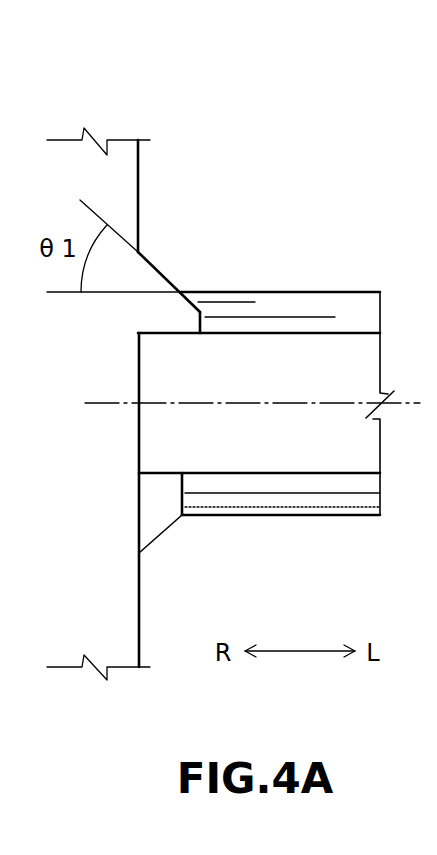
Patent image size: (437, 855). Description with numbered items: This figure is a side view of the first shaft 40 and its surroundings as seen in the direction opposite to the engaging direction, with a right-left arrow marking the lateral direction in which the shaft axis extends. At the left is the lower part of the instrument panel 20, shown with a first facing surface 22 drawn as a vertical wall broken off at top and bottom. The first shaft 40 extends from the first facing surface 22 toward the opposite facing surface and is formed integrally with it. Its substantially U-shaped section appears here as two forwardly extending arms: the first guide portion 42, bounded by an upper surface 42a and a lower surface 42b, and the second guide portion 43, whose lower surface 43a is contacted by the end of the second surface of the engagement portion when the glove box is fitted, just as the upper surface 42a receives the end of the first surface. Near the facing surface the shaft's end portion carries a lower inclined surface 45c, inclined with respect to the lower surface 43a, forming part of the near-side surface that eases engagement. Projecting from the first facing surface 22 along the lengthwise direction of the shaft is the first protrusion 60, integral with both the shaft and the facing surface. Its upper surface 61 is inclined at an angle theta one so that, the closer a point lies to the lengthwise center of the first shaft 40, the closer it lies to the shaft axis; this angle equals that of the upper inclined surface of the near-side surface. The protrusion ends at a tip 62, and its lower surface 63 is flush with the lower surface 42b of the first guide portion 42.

The instrument panel 20 is at (131, 143).
The first facing surface 22 is at (142, 180).
The first protrusion 60 is at (147, 452).
The upper surface 61 is at (163, 270).
The tip 62 is at (203, 328).
The lower surface 63 is at (165, 335).
The first shaft 40 is at (287, 411).
The first guide portion 42 is at (287, 369).
The upper surface 42a is at (268, 291).
The lower surface 42b is at (288, 335).
The second guide portion 43 is at (281, 510).
The lower surface 43a is at (250, 518).
The lower inclined surface 45c is at (165, 533).